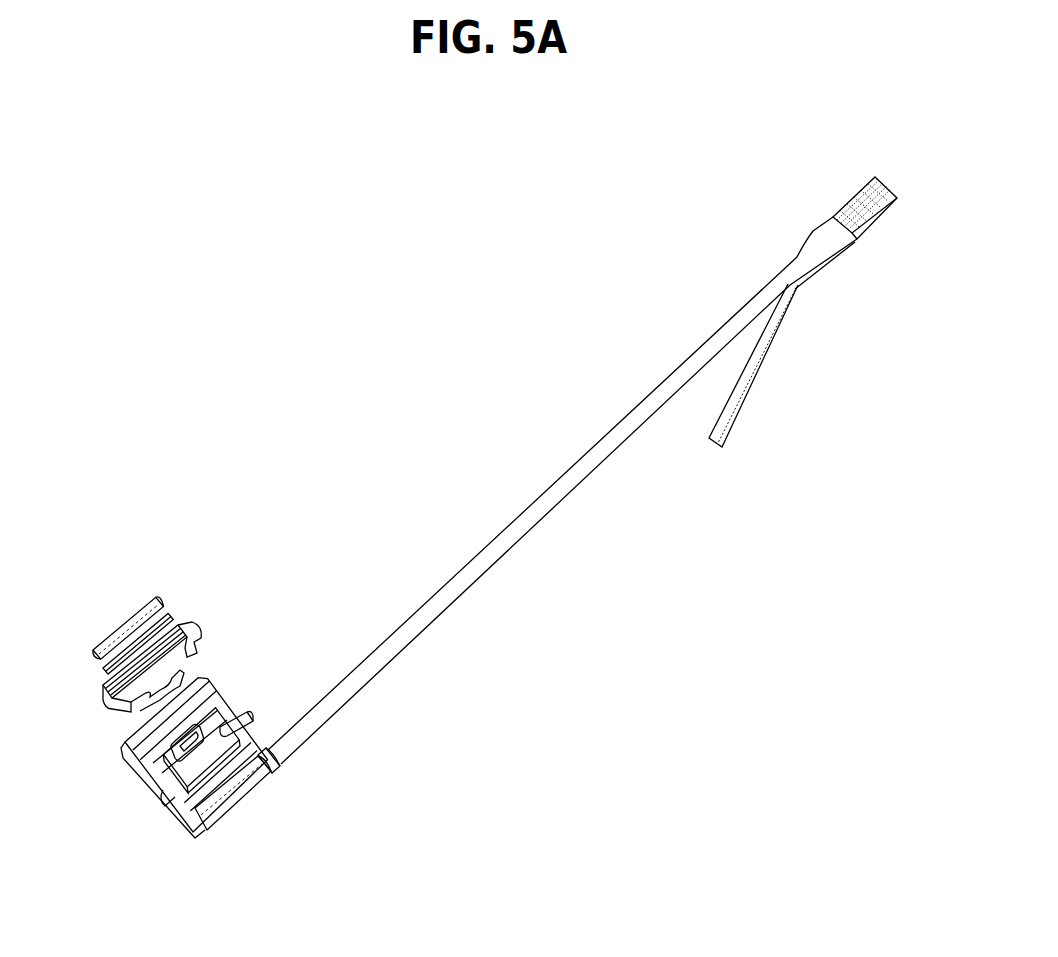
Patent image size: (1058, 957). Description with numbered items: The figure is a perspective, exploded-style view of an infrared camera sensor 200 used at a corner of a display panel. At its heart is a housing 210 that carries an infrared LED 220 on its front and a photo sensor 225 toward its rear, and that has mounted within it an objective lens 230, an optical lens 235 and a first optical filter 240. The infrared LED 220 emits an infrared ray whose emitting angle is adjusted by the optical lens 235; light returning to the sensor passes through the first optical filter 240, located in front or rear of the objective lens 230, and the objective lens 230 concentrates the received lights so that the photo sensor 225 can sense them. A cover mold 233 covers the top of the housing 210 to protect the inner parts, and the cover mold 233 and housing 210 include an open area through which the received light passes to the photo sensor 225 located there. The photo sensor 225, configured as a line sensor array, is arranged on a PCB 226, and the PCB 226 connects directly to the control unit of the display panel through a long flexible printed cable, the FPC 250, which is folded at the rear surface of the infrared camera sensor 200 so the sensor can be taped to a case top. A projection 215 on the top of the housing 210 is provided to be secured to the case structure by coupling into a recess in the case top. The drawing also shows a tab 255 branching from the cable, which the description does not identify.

The infrared camera sensor 200 is at (281, 506).
The housing 210 is at (137, 754).
The projection 215 is at (168, 757).
The infrared LED 220 is at (220, 729).
The photo sensor 225 is at (222, 792).
The PCB 226 is at (273, 770).
The objective lens 230 is at (176, 660).
The cover mold 233 is at (185, 627).
The optical lens 235 is at (169, 612).
The first optical filter 240 is at (125, 630).
The FPC 250 is at (492, 552).
The blade 255 is at (748, 374).